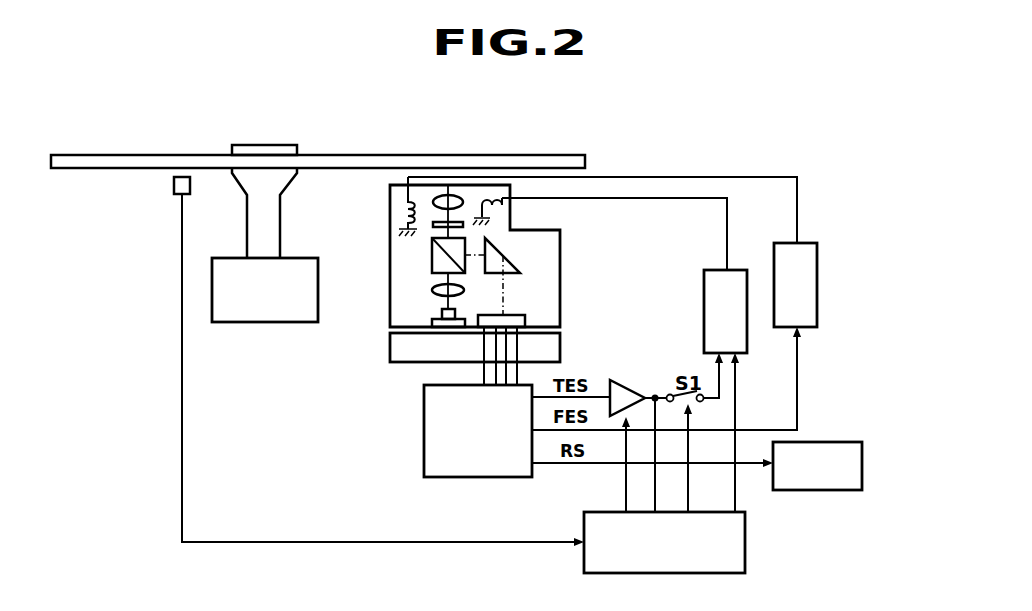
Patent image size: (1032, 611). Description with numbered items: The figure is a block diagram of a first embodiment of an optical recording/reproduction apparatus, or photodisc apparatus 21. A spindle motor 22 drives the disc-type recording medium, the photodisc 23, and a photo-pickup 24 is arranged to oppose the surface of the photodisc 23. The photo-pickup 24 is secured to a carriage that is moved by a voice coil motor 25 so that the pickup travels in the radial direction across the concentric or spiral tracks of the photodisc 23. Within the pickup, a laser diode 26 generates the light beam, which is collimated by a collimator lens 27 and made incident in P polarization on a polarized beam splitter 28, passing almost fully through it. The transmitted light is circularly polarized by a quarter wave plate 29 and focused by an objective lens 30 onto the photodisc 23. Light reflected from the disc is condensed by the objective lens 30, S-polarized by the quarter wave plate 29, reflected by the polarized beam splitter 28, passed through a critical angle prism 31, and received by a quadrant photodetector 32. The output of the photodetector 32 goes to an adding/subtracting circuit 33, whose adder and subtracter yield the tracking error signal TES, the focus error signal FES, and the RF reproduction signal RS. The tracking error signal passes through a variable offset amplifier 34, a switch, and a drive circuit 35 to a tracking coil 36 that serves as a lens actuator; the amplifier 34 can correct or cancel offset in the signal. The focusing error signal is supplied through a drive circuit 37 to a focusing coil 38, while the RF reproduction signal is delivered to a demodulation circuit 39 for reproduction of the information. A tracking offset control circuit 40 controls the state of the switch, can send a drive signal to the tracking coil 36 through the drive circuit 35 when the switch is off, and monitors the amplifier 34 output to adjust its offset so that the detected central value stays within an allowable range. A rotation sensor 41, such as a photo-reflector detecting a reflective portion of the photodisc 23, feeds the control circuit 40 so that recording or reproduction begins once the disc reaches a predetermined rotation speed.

The photodisc apparatus 21 is at (652, 150).
The spindle motor 22 is at (257, 324).
The photodisc 23 is at (156, 155).
The photo-pickup 24 is at (560, 290).
The voice coil motor 25 is at (560, 350).
The laser diode 26 is at (432, 316).
The collimator lens 27 is at (432, 290).
The polarized beam splitter 28 is at (432, 258).
The quarter wave plate 29 is at (433, 225).
The objective lens 30 is at (444, 193).
The critical angle prism 31 is at (512, 256).
The quadrant photodetector 32 is at (525, 320).
The adding/subtracting circuit 33 is at (424, 430).
The variable offset amplifier 34 is at (632, 378).
The drive circuit 35 is at (707, 270).
The tracking coil 36 is at (500, 205).
The drive circuit 37 is at (787, 243).
The focusing coil 38 is at (405, 200).
The demodulation circuit 39 is at (825, 442).
The tracking offset control circuit 40 is at (745, 542).
The rotation sensor 41 is at (173, 187).